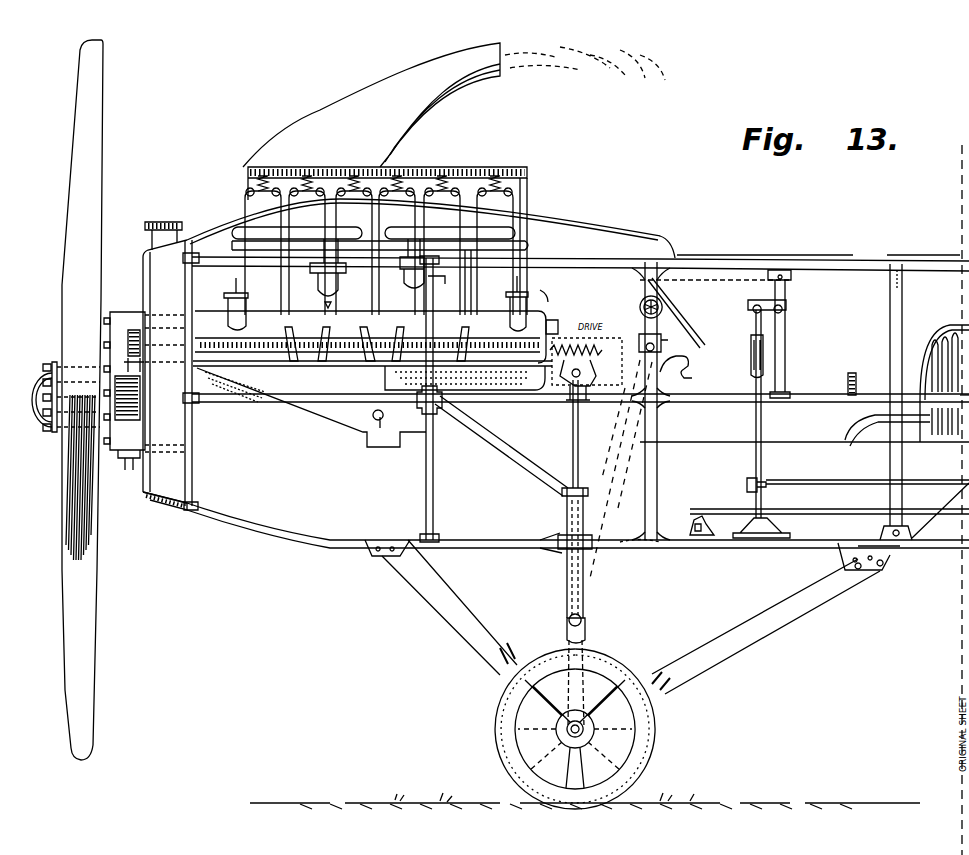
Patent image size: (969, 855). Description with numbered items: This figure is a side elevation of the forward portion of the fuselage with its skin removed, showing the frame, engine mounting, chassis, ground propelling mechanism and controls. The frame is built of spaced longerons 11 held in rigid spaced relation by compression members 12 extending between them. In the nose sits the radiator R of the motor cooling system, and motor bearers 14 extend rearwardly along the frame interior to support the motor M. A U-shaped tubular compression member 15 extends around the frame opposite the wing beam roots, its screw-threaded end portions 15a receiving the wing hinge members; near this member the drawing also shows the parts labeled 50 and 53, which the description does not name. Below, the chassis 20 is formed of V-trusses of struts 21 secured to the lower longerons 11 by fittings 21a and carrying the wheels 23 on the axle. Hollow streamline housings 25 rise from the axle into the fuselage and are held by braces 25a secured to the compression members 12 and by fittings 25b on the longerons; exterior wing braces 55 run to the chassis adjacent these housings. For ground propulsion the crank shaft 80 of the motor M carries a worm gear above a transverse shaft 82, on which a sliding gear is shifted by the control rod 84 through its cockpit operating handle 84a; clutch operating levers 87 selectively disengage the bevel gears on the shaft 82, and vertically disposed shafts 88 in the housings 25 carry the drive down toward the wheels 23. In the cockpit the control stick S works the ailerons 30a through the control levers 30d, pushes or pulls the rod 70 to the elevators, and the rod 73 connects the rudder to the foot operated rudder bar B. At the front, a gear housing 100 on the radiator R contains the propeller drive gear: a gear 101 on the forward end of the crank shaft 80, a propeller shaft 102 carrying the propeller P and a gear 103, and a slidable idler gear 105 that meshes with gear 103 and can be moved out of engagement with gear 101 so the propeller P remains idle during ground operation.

The propeller P is at (100, 183).
The radiator R is at (152, 272).
The motor M is at (500, 188).
The longerons 11 is at (590, 259).
The compression members 12 is at (434, 332).
The motor bearers 14 is at (248, 362).
The compression member 15 is at (660, 385).
The end portions of the compression member 15a is at (662, 350).
The chassis 20 is at (555, 729).
The struts 21 is at (470, 610).
The fittings 21a is at (382, 558).
The wheels 23 is at (656, 748).
The streamline housings 25 is at (566, 516).
The braces 25a is at (500, 438).
The fittings 25b is at (545, 548).
The ailerons 30a is at (747, 486).
The control levers 30d is at (788, 308).
The instrument 50 is at (662, 306).
The control rod 53 is at (640, 304).
The wing braces 55 is at (588, 632).
The rod 70 is at (800, 481).
The rod 73 is at (800, 512).
The crank shaft 80 is at (225, 308).
The shaft 82 is at (594, 354).
The control rod 84 is at (604, 372).
The operating handle 84a is at (856, 382).
The clutch operating levers 87 is at (690, 364).
The vertically disposed shafts 88 is at (580, 448).
The gear housing 100 is at (150, 494).
The gear 101 is at (150, 325).
The propeller shaft 102 is at (138, 358).
The gear 103 is at (140, 418).
The idler gear 105 is at (136, 358).
The rudder bar B is at (697, 518).
The control stick S is at (764, 352).